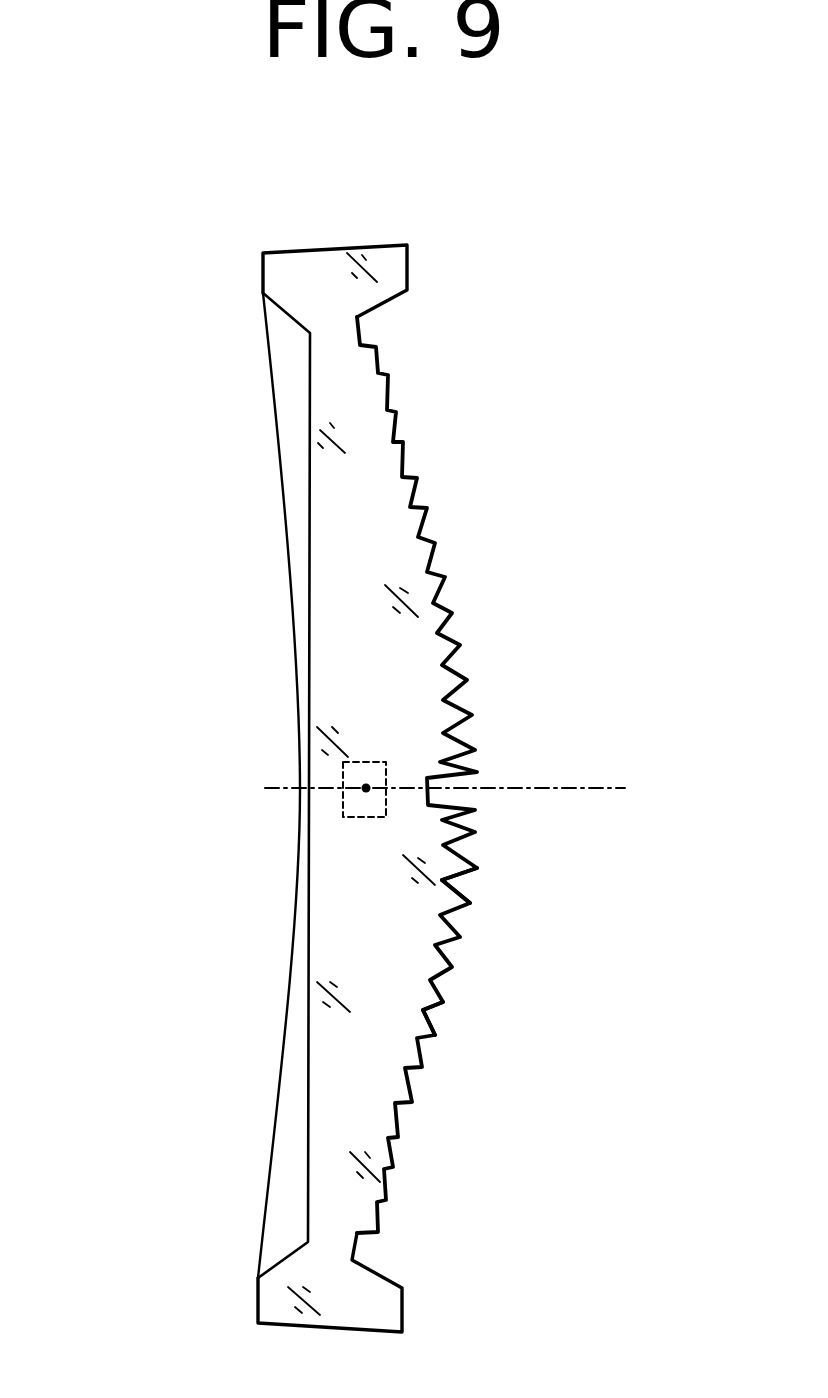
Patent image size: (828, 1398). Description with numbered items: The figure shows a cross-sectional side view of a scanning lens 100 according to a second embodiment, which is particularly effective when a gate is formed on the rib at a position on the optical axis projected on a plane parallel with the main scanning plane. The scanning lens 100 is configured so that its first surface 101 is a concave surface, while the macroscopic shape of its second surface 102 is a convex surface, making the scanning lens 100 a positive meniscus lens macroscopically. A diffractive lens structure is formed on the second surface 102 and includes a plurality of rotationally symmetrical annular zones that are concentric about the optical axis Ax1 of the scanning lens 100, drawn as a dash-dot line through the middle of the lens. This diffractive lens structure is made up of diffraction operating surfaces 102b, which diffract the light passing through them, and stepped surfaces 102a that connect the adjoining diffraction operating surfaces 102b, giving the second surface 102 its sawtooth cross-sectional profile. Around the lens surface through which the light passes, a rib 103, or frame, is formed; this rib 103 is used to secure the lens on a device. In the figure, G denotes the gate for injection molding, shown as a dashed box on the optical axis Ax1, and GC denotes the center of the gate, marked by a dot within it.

The scanning lens 100 is at (243, 479).
The first surface 101 is at (310, 592).
The second surface 102 is at (470, 688).
The stepped surfaces 102a is at (460, 885).
The diffraction operating surfaces 102b is at (460, 890).
The rib 103 is at (292, 1110).
The optical axis Ax1 is at (578, 790).
The gate G is at (343, 775).
The center of the gate GC is at (366, 788).